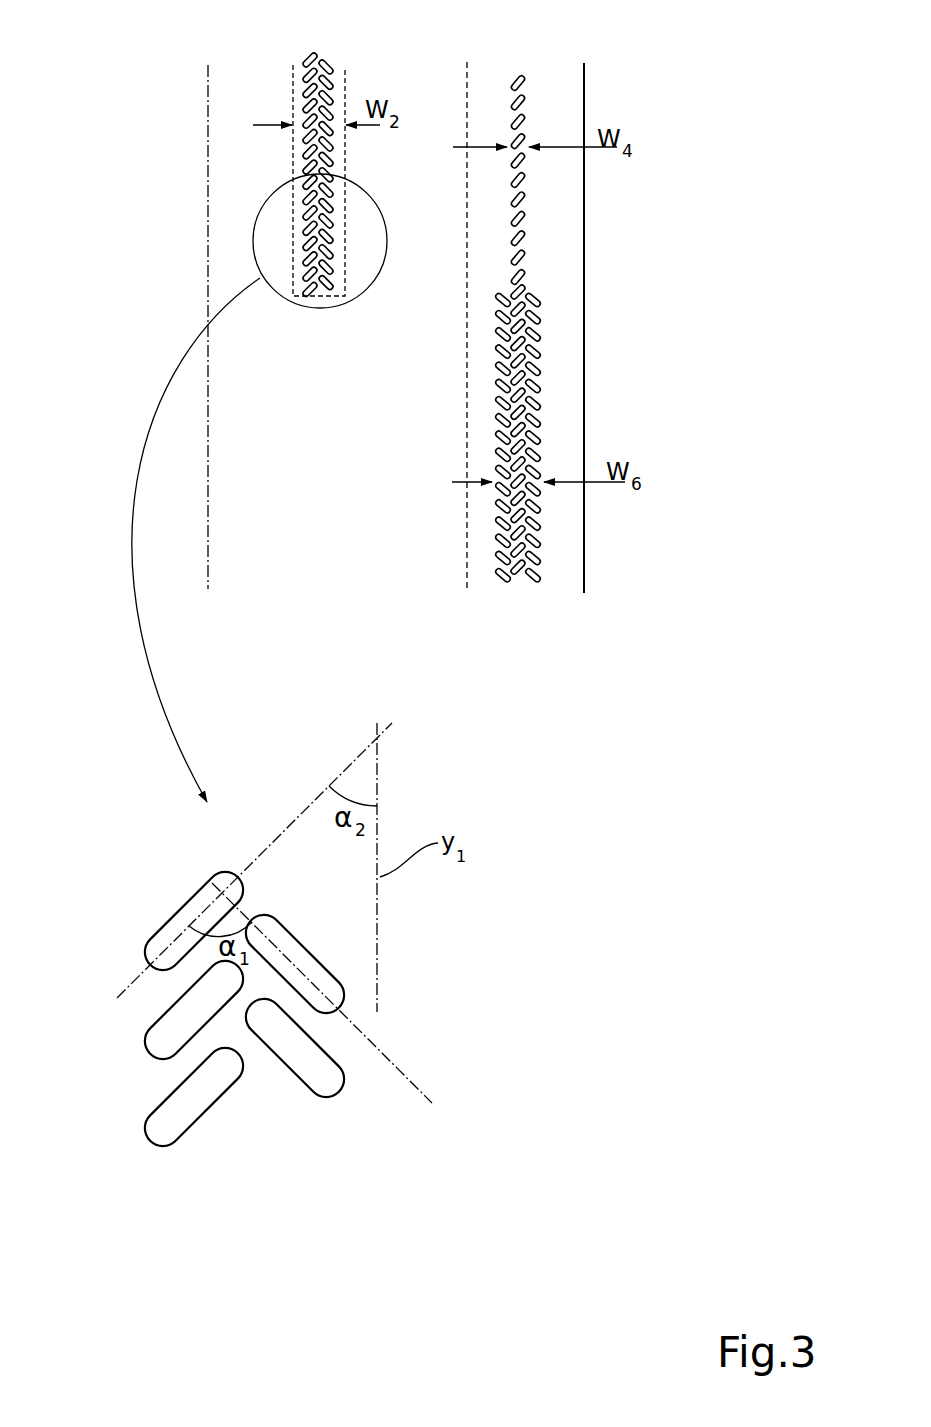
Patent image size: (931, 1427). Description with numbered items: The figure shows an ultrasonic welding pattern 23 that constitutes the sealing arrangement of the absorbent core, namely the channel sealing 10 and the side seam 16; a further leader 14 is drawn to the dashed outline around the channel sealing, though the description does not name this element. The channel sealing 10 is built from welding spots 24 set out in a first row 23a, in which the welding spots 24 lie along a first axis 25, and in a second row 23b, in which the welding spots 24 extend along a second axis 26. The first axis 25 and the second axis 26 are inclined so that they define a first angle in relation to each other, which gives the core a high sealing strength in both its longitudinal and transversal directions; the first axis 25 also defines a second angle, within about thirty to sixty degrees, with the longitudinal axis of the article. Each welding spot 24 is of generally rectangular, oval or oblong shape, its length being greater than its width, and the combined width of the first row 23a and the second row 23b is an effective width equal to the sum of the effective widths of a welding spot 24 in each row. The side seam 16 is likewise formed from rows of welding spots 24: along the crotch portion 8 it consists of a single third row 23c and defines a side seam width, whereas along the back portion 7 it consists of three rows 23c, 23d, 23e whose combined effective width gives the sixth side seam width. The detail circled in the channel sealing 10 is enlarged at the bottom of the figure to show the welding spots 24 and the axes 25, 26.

The back portion 7 is at (657, 408).
The crotch portion 8 is at (645, 98).
The channel sealing 10 is at (293, 90).
The first perforation line region 14 is at (293, 160).
The side seam 16 is at (540, 528).
The welding pattern 23 is at (505, 257).
The first row 23a is at (315, 52).
The second row 23b is at (327, 63).
The third row 23c is at (520, 72).
The fourth row 23d is at (503, 580).
The fifth row 23e is at (537, 582).
The welding spot 24 is at (160, 972).
The first axis 25 is at (127, 979).
The second axis 26 is at (408, 1071).